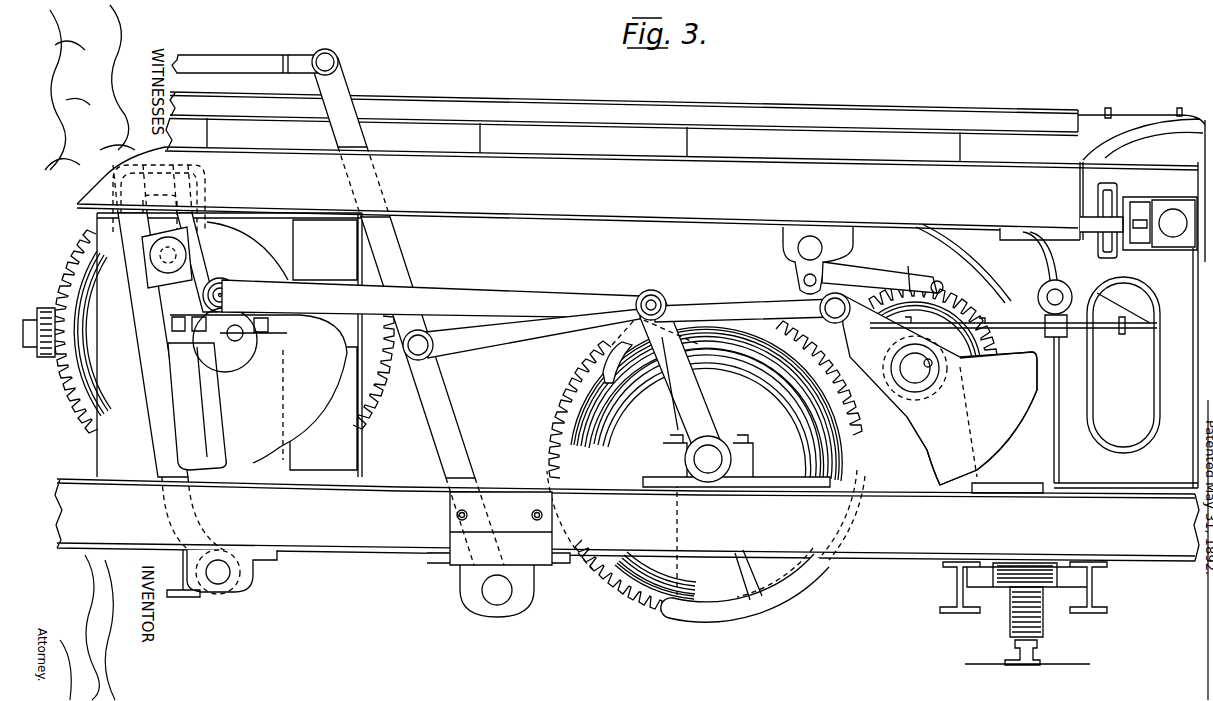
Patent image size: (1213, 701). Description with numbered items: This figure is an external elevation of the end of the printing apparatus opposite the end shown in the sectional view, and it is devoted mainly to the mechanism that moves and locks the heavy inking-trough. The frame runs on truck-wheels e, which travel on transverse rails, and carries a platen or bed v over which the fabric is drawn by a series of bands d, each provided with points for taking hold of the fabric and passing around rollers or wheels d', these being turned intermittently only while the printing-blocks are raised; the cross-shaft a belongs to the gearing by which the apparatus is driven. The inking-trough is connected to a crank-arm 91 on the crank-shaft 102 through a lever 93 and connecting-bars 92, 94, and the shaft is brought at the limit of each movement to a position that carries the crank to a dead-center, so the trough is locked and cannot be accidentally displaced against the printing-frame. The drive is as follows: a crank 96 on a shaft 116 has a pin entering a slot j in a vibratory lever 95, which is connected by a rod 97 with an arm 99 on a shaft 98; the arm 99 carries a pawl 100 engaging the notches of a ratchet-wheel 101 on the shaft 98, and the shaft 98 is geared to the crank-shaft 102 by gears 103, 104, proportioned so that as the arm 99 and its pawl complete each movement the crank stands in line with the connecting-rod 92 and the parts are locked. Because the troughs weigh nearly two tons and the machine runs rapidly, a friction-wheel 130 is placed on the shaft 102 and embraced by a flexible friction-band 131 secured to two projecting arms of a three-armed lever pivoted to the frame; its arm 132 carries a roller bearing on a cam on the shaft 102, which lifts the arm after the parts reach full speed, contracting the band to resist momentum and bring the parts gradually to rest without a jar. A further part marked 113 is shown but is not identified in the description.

The crank-arm 91 is at (903, 388).
The connecting-bar 92 is at (755, 311).
The lever 93 is at (407, 265).
The connecting-bar 94 is at (255, 51).
The vibratory lever 95 is at (157, 417).
The crank 96 is at (187, 303).
The rod 97 is at (431, 320).
The shaft 98 is at (712, 454).
The arm 99 is at (677, 404).
The pawl 100 is at (603, 352).
The ratchet-wheel 101 is at (585, 428).
The crank-shaft 102 is at (921, 378).
The gear 103 is at (560, 466).
The gear 104 is at (978, 352).
The shaft end 113 is at (33, 352).
The shaft 116 is at (232, 342).
The friction-wheel 130 is at (984, 303).
The flexible friction-band 131 is at (950, 243).
The arm 132 is at (863, 260).
The cross-shaft a is at (1121, 330).
The band d is at (1130, 101).
The roller or wheel d' is at (1144, 188).
The truck-wheel e is at (1040, 622).
The slot j is at (197, 341).
The platen or bed v is at (1030, 654).